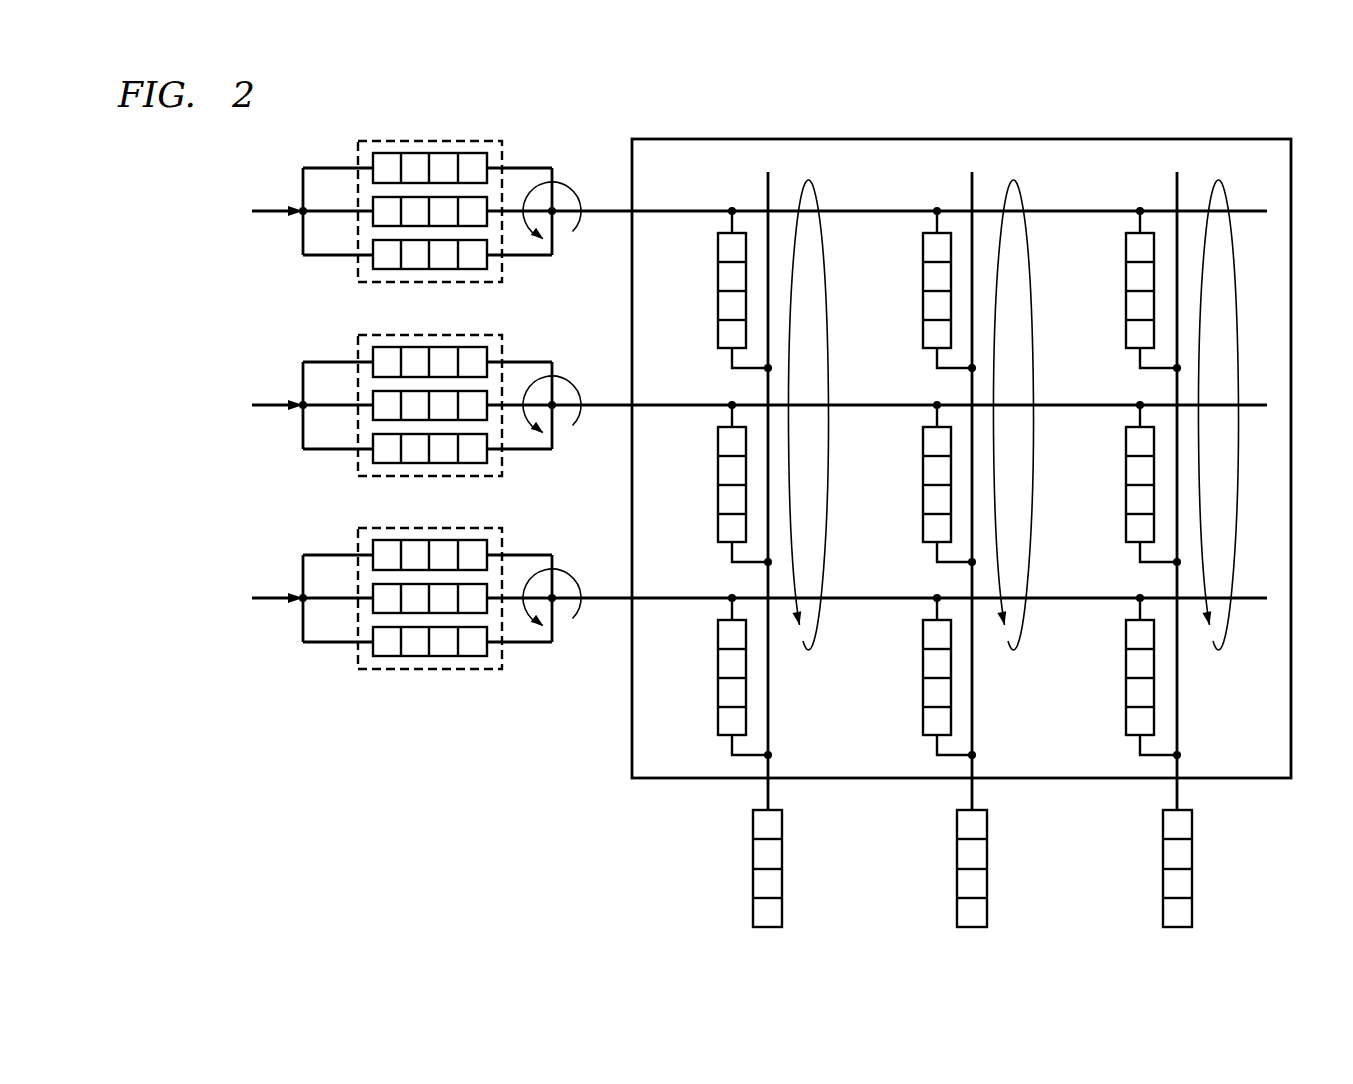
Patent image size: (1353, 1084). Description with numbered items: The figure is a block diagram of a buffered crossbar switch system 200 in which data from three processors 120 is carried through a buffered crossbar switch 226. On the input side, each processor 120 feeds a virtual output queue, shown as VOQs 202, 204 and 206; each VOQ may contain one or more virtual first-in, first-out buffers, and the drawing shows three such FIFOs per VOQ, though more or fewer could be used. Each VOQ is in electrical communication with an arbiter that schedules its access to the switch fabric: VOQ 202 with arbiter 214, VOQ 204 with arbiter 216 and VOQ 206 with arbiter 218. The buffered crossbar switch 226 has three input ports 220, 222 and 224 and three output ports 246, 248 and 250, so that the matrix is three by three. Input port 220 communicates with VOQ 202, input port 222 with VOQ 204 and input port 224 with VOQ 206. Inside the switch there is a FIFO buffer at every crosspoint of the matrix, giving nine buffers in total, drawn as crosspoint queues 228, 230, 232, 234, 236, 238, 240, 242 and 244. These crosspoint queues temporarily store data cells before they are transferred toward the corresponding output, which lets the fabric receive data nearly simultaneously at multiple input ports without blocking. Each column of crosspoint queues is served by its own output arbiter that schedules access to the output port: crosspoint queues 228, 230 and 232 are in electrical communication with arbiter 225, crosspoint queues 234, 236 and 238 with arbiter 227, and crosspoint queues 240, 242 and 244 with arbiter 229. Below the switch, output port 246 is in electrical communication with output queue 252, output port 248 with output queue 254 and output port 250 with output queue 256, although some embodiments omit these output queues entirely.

The buffered crossbar switch system 200 is at (195, 139).
The processor 120 is at (210, 406).
The virtual output queue 202 is at (358, 154).
The virtual output queue 204 is at (358, 348).
The virtual output queue 206 is at (358, 541).
The arbiter 214 is at (566, 236).
The arbiter 216 is at (566, 430).
The arbiter 218 is at (566, 623).
The input port 220 is at (612, 204).
The input port 222 is at (612, 398).
The input port 224 is at (612, 591).
The arbiter 225 is at (815, 186).
The buffered crossbar switch 226 is at (964, 139).
The arbiter 227 is at (1020, 186).
The arbiter 229 is at (1225, 186).
The crosspoint queue 228 is at (718, 292).
The crosspoint queue 230 is at (718, 486).
The crosspoint queue 232 is at (718, 679).
The crosspoint queue 234 is at (923, 292).
The crosspoint queue 236 is at (923, 486).
The crosspoint queue 238 is at (923, 679).
The crosspoint queue 240 is at (1126, 292).
The crosspoint queue 242 is at (1126, 486).
The crosspoint queue 244 is at (1126, 679).
The output port 246 is at (765, 796).
The output port 248 is at (969, 796).
The output port 250 is at (1174, 796).
The output queue 252 is at (753, 865).
The output queue 254 is at (957, 865).
The output queue 256 is at (1162, 865).